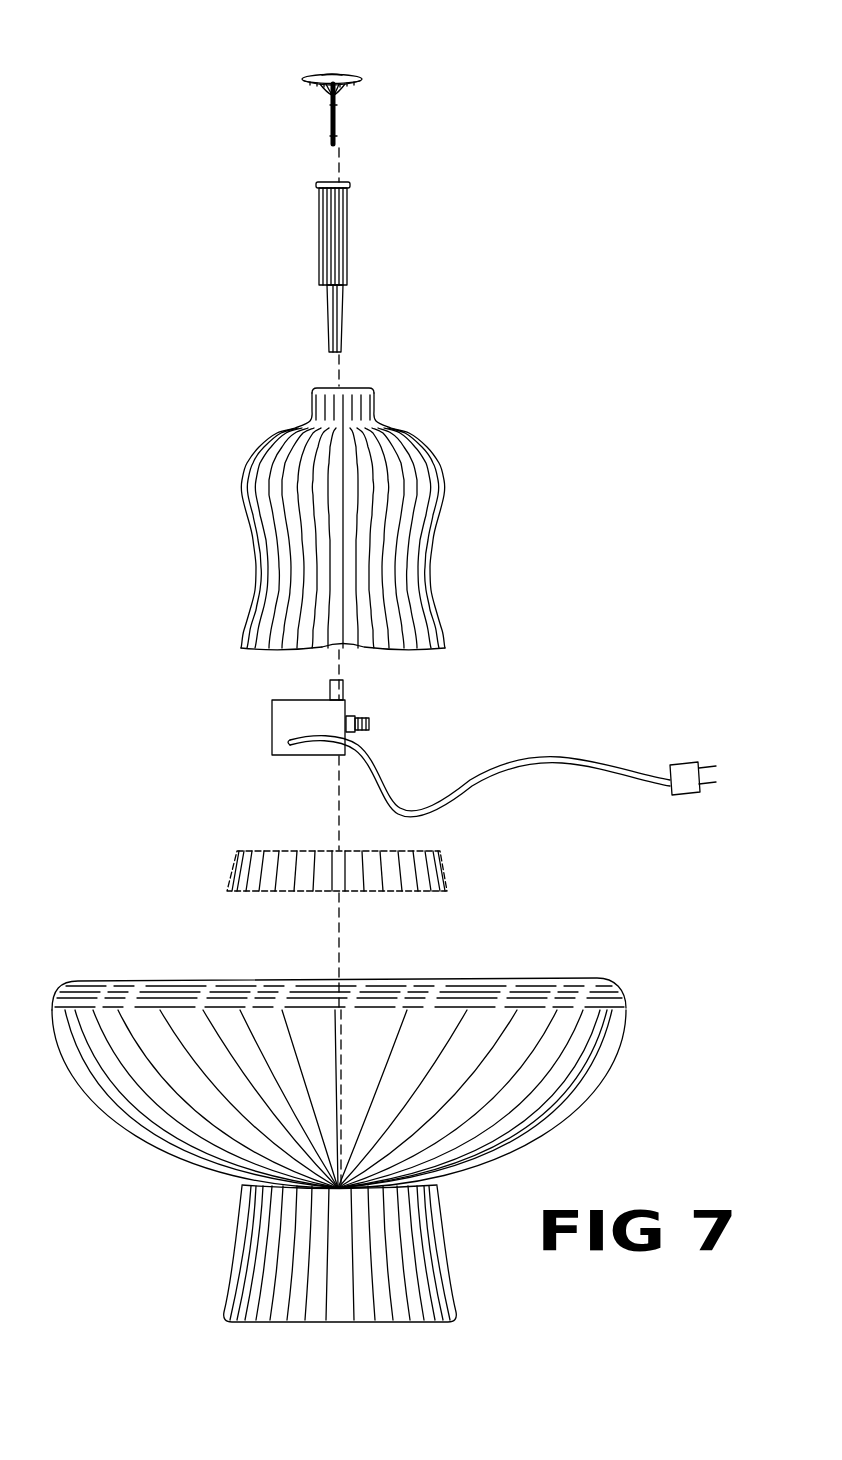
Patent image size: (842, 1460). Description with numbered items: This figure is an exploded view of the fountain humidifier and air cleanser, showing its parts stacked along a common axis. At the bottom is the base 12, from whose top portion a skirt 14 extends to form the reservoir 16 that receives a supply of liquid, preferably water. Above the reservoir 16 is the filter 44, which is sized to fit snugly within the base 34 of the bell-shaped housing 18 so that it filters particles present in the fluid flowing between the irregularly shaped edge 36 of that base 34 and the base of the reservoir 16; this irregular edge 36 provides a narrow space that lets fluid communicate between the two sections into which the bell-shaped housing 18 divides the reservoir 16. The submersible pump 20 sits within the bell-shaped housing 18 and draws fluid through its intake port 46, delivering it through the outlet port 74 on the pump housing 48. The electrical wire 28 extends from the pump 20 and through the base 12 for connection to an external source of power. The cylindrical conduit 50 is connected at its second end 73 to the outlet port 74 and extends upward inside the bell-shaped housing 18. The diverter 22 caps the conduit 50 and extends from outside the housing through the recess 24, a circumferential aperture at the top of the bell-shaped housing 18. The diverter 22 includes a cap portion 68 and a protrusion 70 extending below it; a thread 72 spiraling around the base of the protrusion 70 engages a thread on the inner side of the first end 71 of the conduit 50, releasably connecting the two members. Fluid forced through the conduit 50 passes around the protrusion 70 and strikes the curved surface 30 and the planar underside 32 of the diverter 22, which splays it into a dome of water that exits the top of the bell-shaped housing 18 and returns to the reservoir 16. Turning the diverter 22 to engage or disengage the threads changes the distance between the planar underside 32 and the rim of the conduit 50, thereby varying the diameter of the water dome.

The base 12 is at (253, 1282).
The skirt 14 is at (389, 1048).
The reservoir 16 is at (597, 975).
The bell-shaped housing 18 is at (401, 505).
The submersible pump 20 is at (310, 735).
The diverter 22 is at (317, 100).
The recess 24 is at (369, 382).
The electrical wire 28 is at (530, 763).
The curved surface 30 is at (328, 97).
The planar underside 32 is at (314, 84).
The base of the bell-shaped housing 34 is at (387, 647).
The irregularly shaped edge 36 is at (397, 652).
The filter 44 is at (445, 872).
The intake port 46 is at (366, 733).
The pump housing 48 is at (280, 722).
The conduit 50 is at (379, 260).
The cap portion 68 is at (328, 73).
The protrusion 70 is at (337, 109).
The first end of the conduit 71 is at (343, 180).
The thread 72 is at (337, 140).
The second end of the conduit 73 is at (345, 298).
The outlet port 74 is at (345, 692).